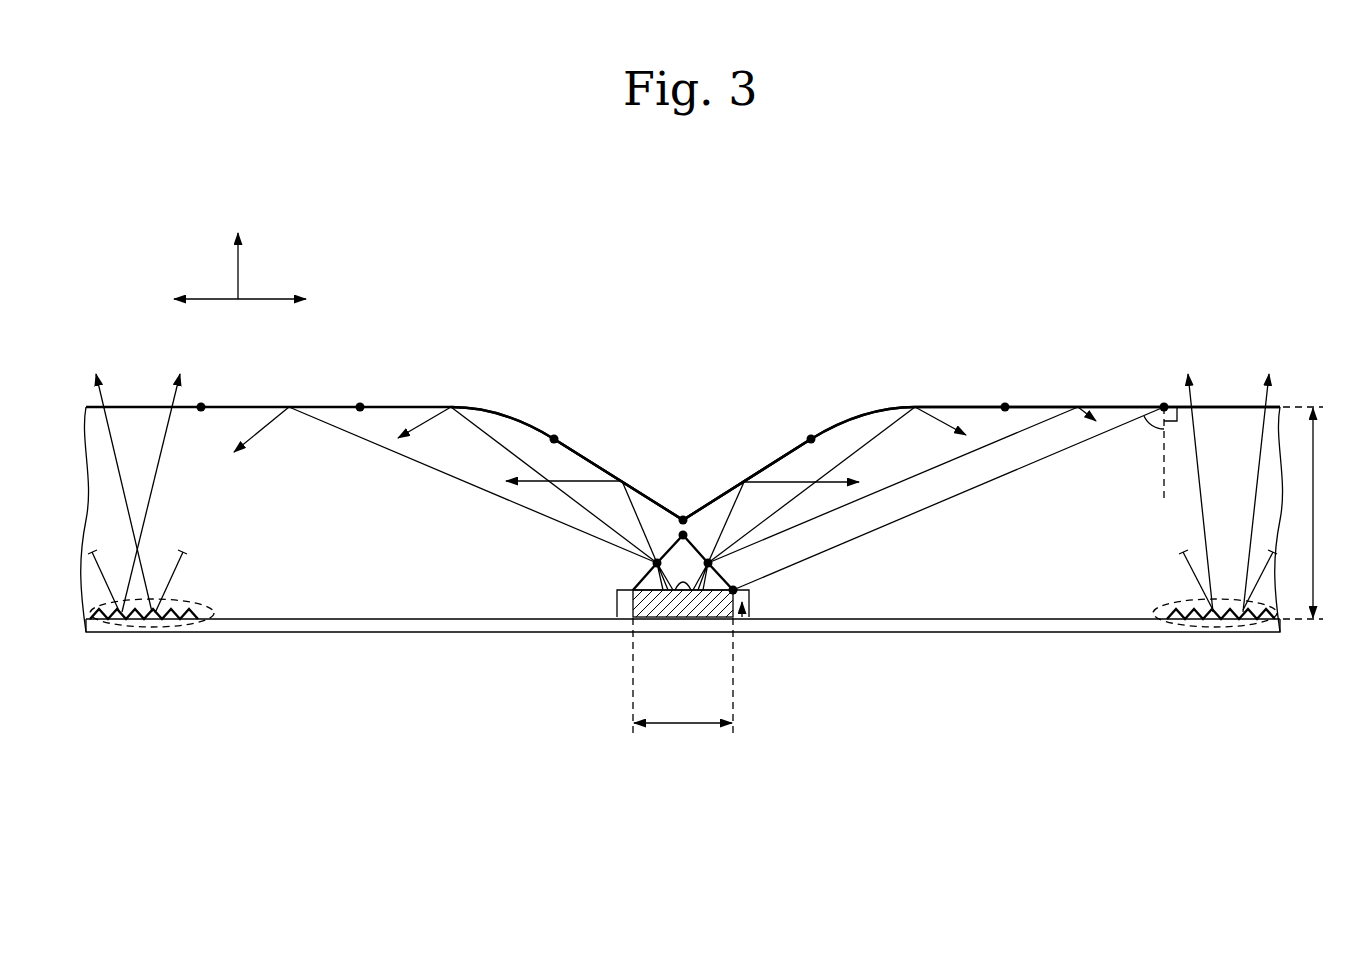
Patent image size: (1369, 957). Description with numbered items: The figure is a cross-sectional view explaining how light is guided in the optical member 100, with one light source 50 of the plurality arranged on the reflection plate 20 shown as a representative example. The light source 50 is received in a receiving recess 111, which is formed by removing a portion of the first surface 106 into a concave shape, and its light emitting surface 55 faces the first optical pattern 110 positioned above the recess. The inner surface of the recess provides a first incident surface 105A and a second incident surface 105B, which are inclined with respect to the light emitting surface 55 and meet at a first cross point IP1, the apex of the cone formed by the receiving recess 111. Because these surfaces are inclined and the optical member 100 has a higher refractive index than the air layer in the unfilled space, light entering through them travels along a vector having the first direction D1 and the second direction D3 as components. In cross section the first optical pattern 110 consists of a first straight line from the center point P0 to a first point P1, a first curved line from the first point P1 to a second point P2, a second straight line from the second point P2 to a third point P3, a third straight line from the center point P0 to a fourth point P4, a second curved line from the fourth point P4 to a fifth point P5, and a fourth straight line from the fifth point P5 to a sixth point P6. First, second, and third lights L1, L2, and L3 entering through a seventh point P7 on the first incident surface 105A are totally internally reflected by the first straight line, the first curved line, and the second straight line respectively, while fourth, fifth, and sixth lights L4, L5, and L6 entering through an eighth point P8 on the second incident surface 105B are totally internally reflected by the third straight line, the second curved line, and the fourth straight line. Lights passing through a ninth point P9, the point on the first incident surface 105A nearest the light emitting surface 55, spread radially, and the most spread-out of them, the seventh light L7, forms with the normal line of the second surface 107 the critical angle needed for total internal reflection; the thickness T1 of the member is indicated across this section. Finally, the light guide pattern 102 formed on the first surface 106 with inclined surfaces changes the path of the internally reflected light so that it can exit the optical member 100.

The optical member 100 is at (946, 296).
The light guide pattern 102 is at (174, 633).
The first incident surface 105A is at (708, 515).
The second incident surface 105B is at (655, 515).
The first surface 106 is at (891, 626).
The second surface 107 is at (1222, 405).
The first optical pattern 110 is at (684, 430).
The receiving recess 111 is at (743, 620).
The reflection plate 20 is at (969, 633).
The light source 50 is at (656, 617).
The light emitting surface 55 is at (689, 592).
The center point P0 is at (681, 513).
The first cross point IP1 is at (689, 528).
The first point P1 is at (810, 434).
The second point P2 is at (1004, 402).
The third point P3 is at (1163, 402).
The fourth point P4 is at (555, 434).
The fifth point P5 is at (360, 402).
The sixth point P6 is at (201, 402).
The seventh point P7 is at (711, 563).
The eighth point P8 is at (654, 563).
The ninth point P9 is at (736, 590).
The first light L1 is at (788, 478).
The second light L2 is at (871, 435).
The third light L3 is at (1043, 418).
The fourth light L4 is at (578, 478).
The fifth light L5 is at (495, 438).
The sixth light L6 is at (324, 420).
The seventh light L7 is at (1121, 422).
The thickness of light guide plate T1 is at (1314, 513).
The first direction D1 is at (683, 686).
The second direction D3 is at (237, 260).